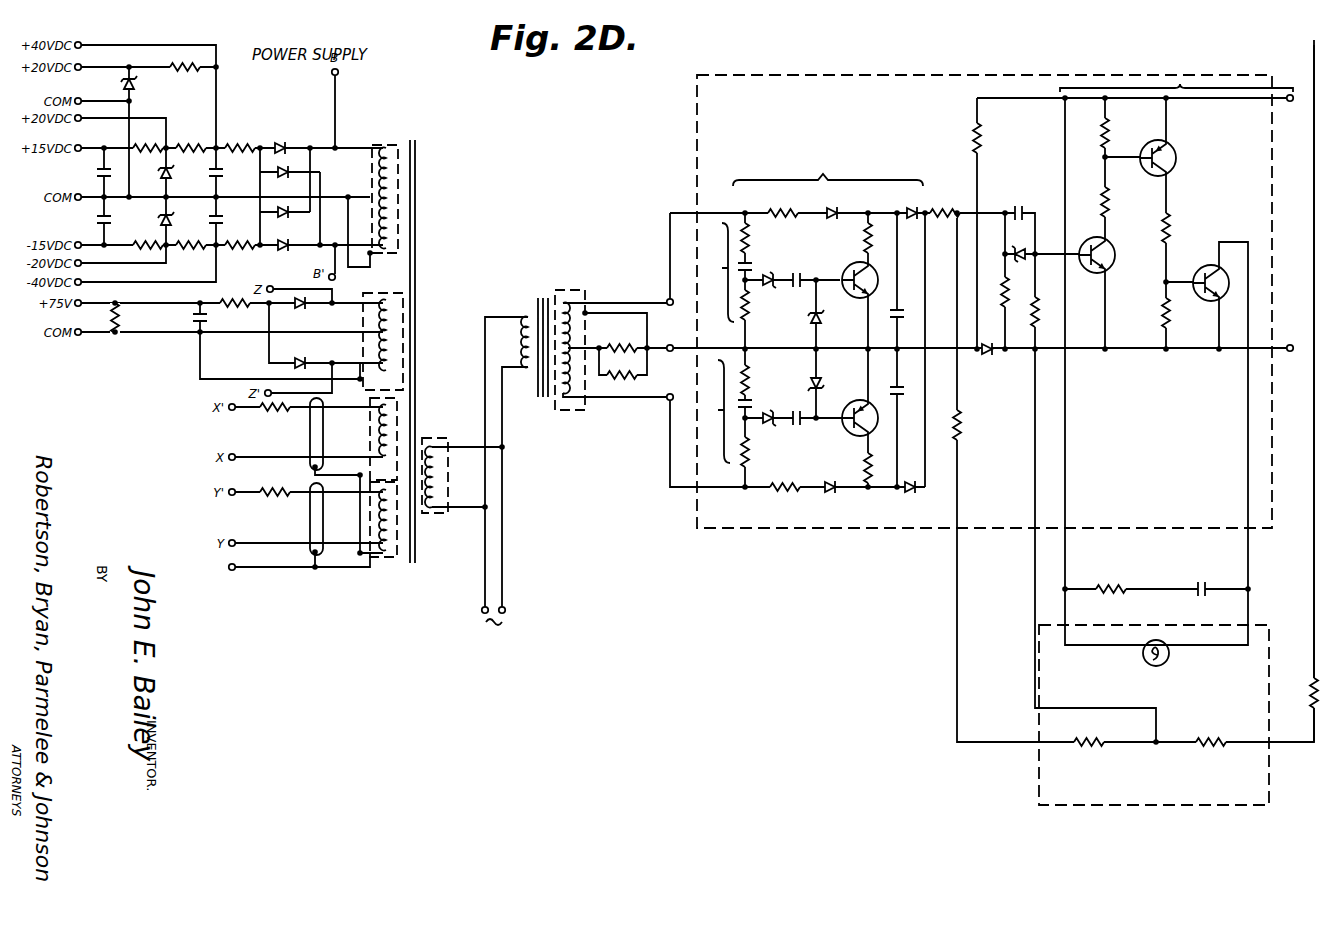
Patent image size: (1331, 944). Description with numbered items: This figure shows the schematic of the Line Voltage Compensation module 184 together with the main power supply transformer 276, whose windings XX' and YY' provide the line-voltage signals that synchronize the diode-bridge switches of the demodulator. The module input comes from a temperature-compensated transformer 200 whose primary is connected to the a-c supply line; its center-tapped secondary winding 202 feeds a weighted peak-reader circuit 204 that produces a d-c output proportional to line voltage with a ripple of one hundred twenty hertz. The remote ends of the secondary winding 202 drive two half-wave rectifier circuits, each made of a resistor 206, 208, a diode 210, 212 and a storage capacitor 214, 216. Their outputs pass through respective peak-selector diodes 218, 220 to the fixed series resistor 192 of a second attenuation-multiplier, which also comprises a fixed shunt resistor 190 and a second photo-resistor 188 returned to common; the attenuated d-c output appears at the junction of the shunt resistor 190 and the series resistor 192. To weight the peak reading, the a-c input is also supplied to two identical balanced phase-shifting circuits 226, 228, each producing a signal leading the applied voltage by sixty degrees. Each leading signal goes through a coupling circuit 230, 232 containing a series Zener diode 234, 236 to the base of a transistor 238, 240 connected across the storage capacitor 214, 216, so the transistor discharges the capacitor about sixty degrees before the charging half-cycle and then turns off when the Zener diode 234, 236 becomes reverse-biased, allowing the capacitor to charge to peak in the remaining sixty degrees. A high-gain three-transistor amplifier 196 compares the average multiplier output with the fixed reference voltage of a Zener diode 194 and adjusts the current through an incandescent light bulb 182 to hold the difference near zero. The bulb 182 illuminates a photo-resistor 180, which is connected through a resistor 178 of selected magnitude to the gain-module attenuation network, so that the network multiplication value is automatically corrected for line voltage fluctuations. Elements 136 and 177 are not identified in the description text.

The resistor 136 is at (946, 196).
The conductor 177 is at (1314, 44).
The resistor 178 is at (1306, 713).
The photo-resistor 180 is at (1216, 752).
The incandescent light bulb 182 is at (1168, 660).
The Line Voltage Compensation module 184 is at (1006, 71).
The second photo-resistor 188 is at (1096, 748).
The fixed shunt resistor 190 is at (960, 422).
The fixed series resistor 192 is at (942, 220).
The Zener diode 194 is at (1020, 235).
The high-gain three-transistor amplifier 196 is at (1180, 86).
The transformer 200 is at (542, 276).
The center-tapped secondary winding 202 is at (572, 300).
The weighted peak-reader circuit 204 is at (828, 170).
The resistor 206 is at (775, 200).
The resistor 208 is at (772, 496).
The diode 210 is at (839, 209).
The diode 212 is at (832, 492).
The storage capacitor 214 is at (899, 314).
The storage capacitor 216 is at (899, 393).
The peak-selector diode 218 is at (912, 207).
The peak-selector diode 220 is at (904, 490).
The phase-shifting circuit 226 is at (720, 268).
The phase-shifting circuit 228 is at (718, 430).
The coupling circuit 230 is at (800, 334).
The coupling circuit 232 is at (796, 387).
The series Zener diode 234 is at (770, 275).
The series Zener diode 236 is at (768, 430).
The transistor 238 is at (853, 303).
The transistor 240 is at (845, 397).
The main power supply transformer 276 is at (410, 586).